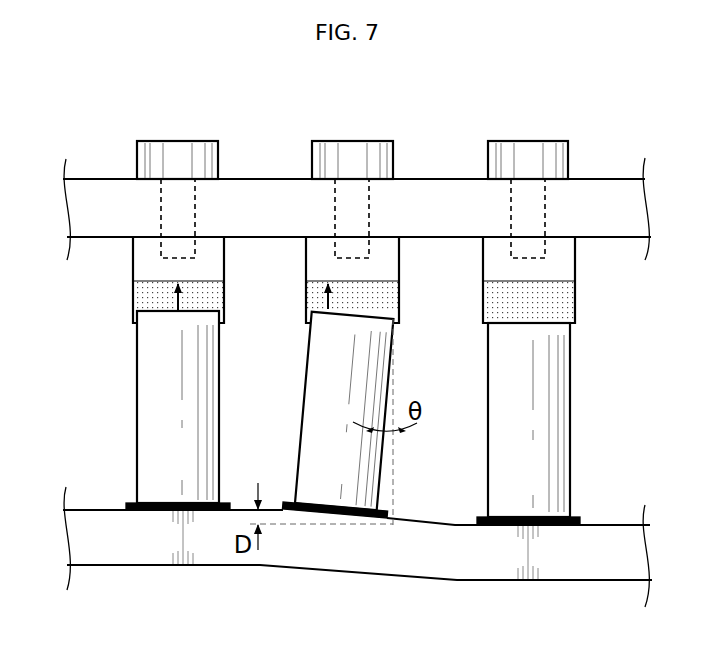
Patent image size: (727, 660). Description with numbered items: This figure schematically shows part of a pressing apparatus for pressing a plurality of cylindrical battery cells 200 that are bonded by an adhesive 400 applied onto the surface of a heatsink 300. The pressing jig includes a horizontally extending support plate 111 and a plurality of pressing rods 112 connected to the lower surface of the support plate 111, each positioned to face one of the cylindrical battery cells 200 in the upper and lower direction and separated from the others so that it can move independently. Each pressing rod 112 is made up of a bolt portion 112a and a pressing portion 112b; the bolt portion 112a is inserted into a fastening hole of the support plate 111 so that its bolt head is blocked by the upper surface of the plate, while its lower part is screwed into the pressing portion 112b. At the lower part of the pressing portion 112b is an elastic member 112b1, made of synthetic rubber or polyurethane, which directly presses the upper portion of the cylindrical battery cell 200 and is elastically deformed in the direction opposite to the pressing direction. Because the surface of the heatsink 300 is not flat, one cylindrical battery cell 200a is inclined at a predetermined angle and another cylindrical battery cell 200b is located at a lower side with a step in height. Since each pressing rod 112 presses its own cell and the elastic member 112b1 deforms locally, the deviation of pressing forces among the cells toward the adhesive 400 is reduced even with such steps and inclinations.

The support plate 111 is at (262, 190).
The bolt portion 112a is at (180, 148).
The pressing rod 112 is at (348, 294).
The pressing portion 112b is at (225, 255).
The elastic member 112b1 is at (133, 301).
The cylindrical battery cell 200 is at (102, 381).
The cylindrical battery cell inclined at a predetermined angle 200a is at (308, 432).
The cylindrical battery cell located at a lower side 200b is at (492, 438).
The heatsink 300 is at (130, 555).
The adhesive 400 is at (150, 502).